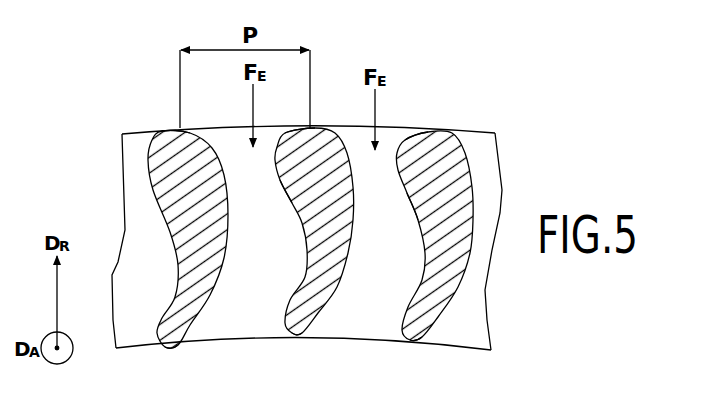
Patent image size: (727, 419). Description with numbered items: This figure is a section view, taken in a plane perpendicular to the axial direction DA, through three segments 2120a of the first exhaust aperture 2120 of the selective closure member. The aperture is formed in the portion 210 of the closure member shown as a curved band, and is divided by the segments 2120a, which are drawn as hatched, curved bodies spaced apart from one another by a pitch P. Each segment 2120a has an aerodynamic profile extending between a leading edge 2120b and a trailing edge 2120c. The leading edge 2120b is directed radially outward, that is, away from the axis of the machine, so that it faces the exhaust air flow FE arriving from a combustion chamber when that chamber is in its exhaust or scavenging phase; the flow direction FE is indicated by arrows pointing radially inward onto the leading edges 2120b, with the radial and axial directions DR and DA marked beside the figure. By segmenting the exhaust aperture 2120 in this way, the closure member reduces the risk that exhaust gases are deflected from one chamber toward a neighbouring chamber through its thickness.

The impeller blade ring 210 is at (503, 115).
The first exhaust aperture 2120 is at (489, 175).
The segments of the first exhaust aperture 2120a is at (316, 219).
The leading edge 2120b is at (182, 128).
The trailing edge 2120c is at (170, 343).